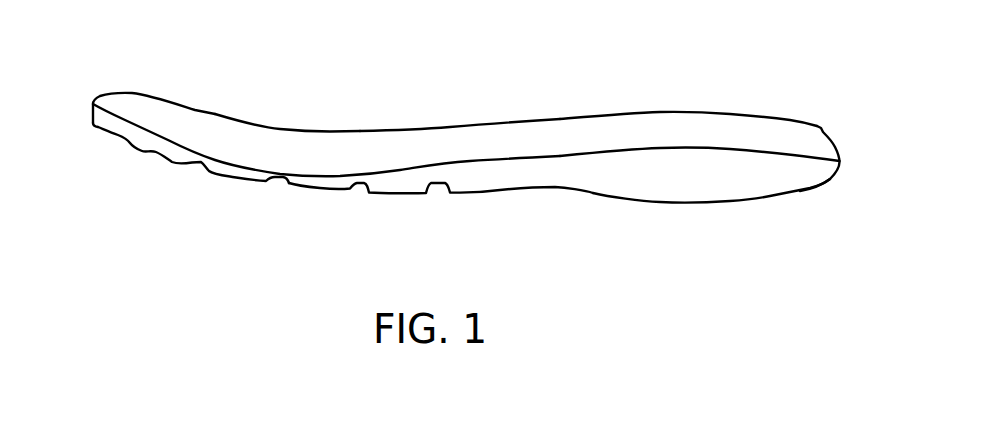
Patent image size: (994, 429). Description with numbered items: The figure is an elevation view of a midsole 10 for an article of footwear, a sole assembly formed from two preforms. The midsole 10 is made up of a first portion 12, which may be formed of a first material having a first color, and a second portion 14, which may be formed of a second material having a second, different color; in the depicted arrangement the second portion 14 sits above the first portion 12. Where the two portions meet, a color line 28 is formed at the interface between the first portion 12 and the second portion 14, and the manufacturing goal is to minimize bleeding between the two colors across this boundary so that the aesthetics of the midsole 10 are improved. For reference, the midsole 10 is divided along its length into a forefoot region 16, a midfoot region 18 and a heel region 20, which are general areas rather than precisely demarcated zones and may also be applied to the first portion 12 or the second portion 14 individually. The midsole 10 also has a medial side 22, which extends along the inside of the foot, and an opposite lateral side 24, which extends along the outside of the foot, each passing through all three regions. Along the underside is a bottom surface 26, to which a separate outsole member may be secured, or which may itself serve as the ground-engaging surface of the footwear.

The midsole 10 is at (659, 72).
The first portion 12 is at (731, 192).
The second portion 14 is at (750, 128).
The forefoot region 16 is at (197, 134).
The midfoot region 18 is at (411, 155).
The heel region 20 is at (671, 183).
The medial side 22 is at (253, 157).
The lateral side 24 is at (362, 130).
The bottom surface 26 is at (538, 190).
The color line 28 is at (519, 158).